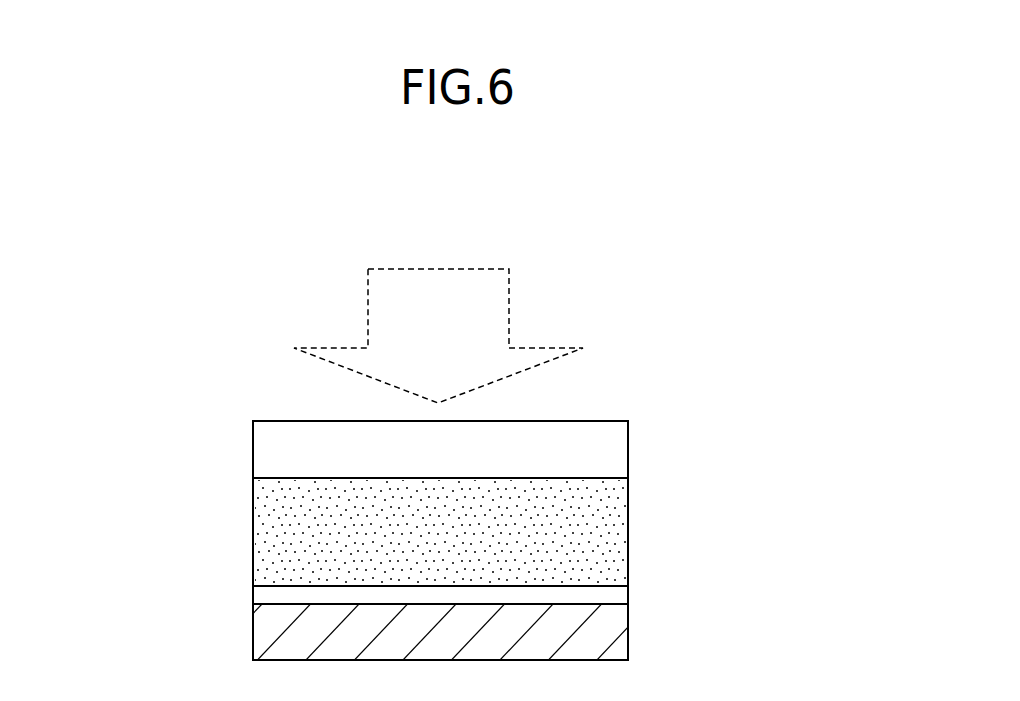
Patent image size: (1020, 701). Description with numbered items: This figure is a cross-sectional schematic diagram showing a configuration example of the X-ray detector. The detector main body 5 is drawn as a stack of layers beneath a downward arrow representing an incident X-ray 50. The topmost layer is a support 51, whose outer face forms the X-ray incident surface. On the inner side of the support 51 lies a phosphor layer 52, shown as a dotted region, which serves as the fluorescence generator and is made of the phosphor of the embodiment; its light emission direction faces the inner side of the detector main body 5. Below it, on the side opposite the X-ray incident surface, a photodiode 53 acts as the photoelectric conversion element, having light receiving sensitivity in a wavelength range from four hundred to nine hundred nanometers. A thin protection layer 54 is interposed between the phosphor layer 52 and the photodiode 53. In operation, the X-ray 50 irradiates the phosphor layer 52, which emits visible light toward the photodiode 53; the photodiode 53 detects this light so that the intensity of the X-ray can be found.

The detector main body 5 is at (197, 342).
The X-ray 50 is at (509, 295).
The support 51 is at (590, 450).
The phosphor layer 52 is at (598, 541).
The photodiode 53 is at (598, 636).
The protection layer 54 is at (272, 595).